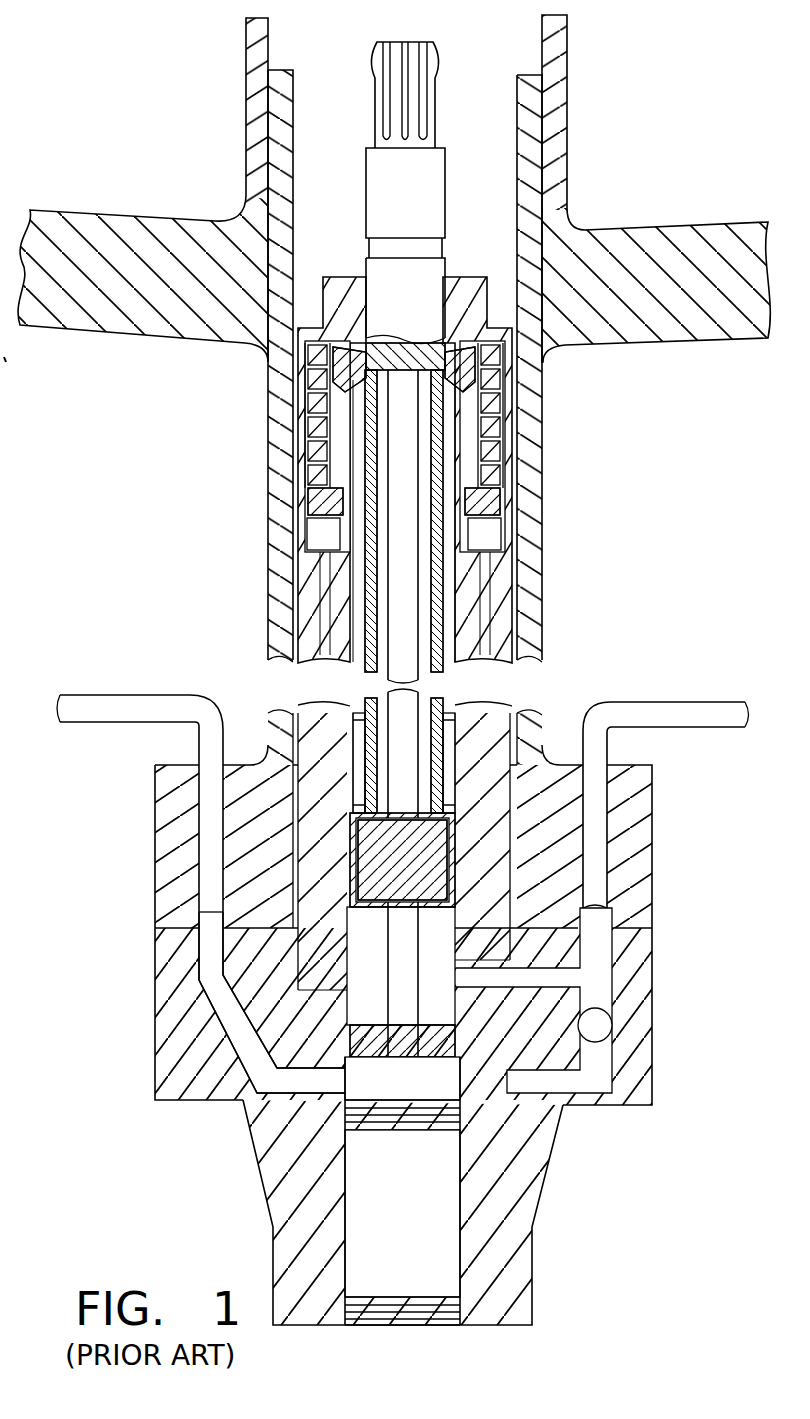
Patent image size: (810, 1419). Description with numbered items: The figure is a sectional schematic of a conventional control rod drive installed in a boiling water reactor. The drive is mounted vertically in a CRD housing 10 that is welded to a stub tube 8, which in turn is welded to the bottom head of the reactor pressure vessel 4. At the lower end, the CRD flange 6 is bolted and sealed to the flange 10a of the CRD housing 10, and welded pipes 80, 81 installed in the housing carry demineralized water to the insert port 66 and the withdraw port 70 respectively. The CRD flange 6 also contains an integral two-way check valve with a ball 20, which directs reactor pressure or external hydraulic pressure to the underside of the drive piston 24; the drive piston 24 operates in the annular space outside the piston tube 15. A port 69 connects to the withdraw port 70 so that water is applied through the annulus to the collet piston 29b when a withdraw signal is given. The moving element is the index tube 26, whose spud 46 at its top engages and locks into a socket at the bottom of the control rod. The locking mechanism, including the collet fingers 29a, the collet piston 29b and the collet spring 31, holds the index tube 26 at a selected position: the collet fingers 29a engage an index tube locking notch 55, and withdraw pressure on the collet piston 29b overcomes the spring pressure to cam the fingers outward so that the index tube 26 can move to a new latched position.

The reactor pressure vessel 4 is at (160, 221).
The stub tube 8 is at (555, 125).
The spud 46 is at (440, 62).
The CRD housing 10 is at (275, 612).
The flange of the CRD housing 10a is at (643, 895).
The collet fingers 29a is at (490, 378).
The collet piston 29b is at (312, 508).
The collet spring 31 is at (310, 450).
The piston tube 15 is at (422, 595).
The index tube 26 is at (445, 635).
The index tube locking notch 55 is at (460, 715).
The drive piston 24 is at (445, 868).
The welded pipe 81 is at (103, 695).
The welded pipe 80 is at (690, 702).
The withdraw port 70 is at (210, 950).
The port 69 is at (280, 1030).
The insert port 66 is at (597, 937).
The ball 20 is at (600, 1003).
The CRD flange 6 is at (532, 1265).